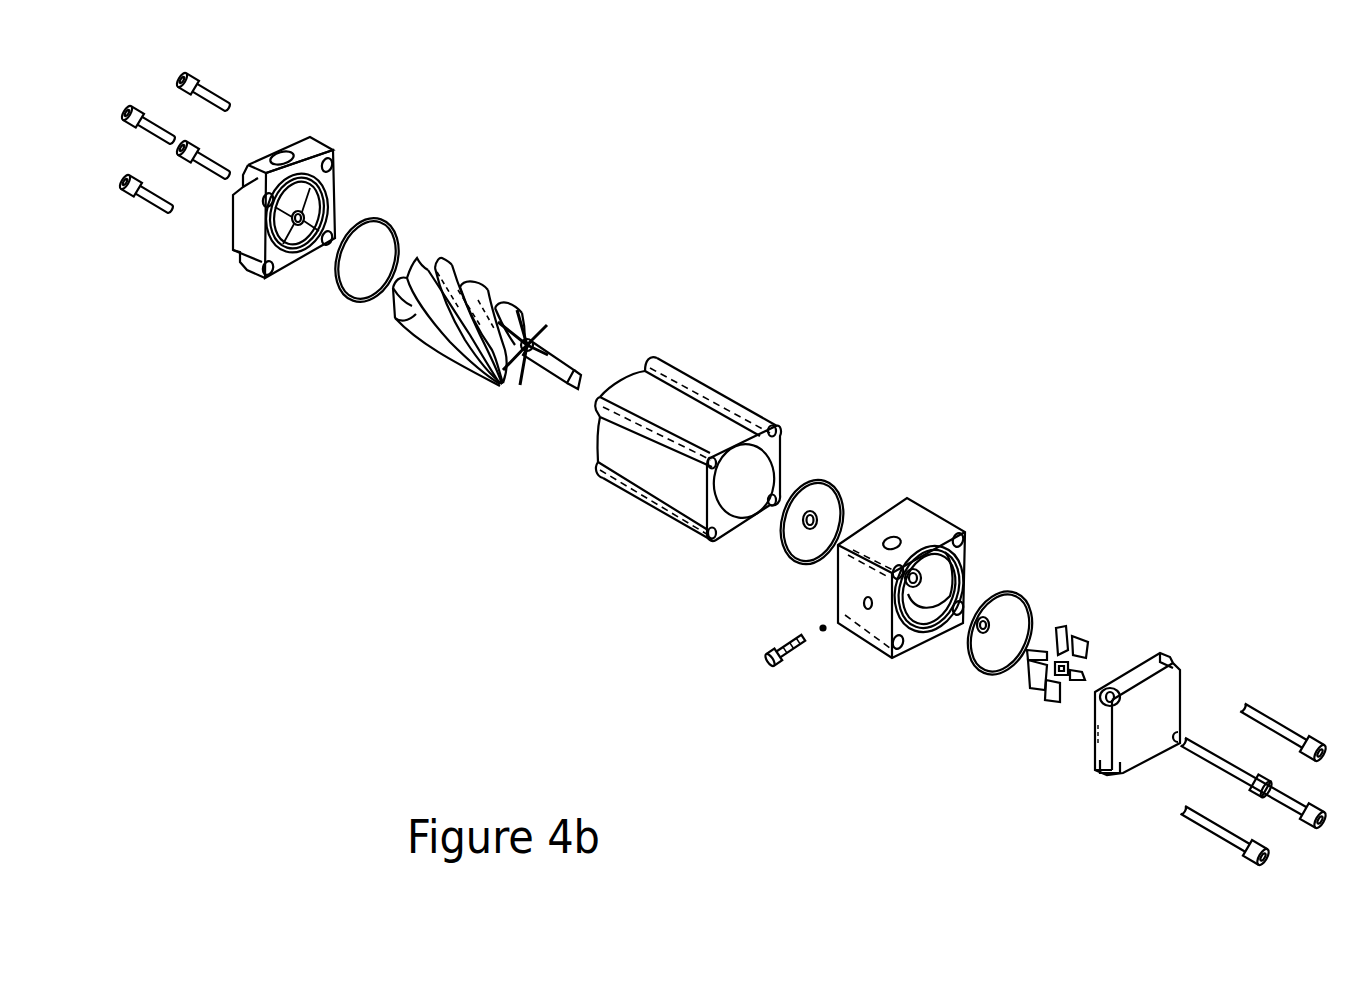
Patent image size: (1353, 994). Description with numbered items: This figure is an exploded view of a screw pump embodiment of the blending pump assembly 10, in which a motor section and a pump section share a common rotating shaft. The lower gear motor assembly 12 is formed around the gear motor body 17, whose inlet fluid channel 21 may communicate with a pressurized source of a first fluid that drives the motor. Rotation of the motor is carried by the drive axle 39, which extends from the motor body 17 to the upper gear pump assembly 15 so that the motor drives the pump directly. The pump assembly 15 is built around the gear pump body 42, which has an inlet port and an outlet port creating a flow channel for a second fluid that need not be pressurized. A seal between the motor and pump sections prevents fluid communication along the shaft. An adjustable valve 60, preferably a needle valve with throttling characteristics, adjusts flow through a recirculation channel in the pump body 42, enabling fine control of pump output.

The blending pump assembly 10 is at (318, 520).
The lower gear motor assembly 12 is at (688, 156).
The upper gear pump assembly 15 is at (1134, 482).
The gear motor body 17 is at (723, 393).
The inlet fluid channel 21 is at (287, 150).
The drive axle 39 is at (562, 362).
The gear pump body 42 is at (937, 523).
The adjustable valve 60 is at (803, 662).